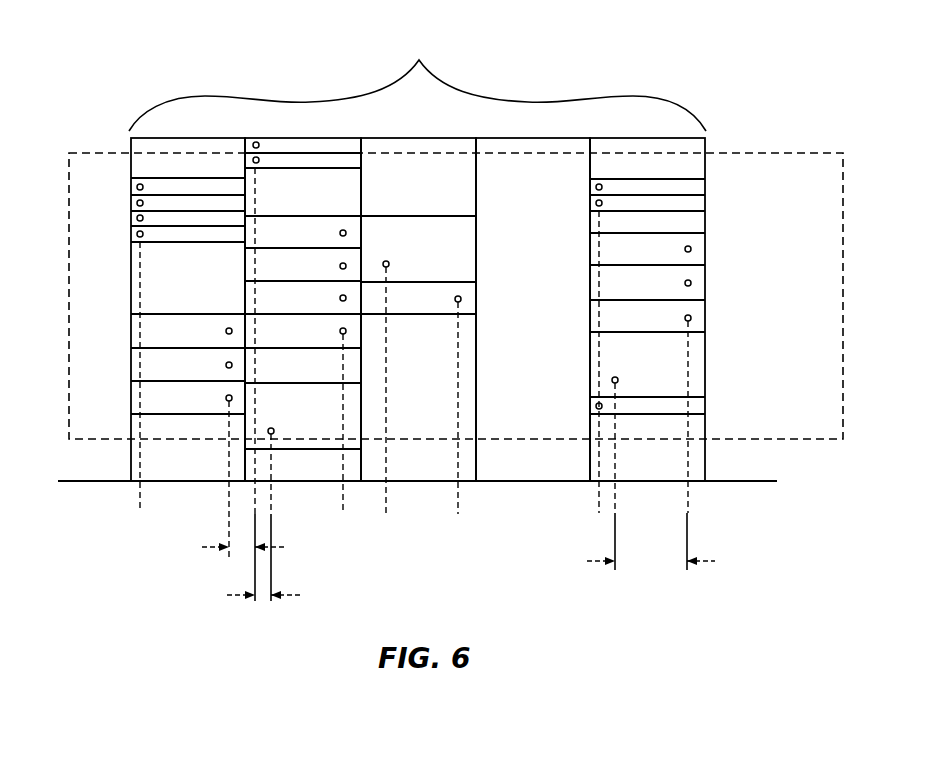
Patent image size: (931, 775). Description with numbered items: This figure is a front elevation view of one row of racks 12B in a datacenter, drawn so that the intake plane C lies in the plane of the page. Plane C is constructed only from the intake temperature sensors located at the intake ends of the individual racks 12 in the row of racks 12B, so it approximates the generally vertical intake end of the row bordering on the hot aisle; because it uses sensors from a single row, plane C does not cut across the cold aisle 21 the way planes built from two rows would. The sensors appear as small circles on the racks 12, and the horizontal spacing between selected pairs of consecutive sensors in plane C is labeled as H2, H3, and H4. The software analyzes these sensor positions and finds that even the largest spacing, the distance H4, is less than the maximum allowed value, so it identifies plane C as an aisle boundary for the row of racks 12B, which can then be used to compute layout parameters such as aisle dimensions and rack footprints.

The rack 12 is at (180, 129).
The row of racks 12B is at (417, 271).
The cold aisle 21 is at (475, 588).
The intake plane C is at (795, 223).
The horizontal spacing H2 is at (282, 565).
The horizontal spacing H3 is at (261, 551).
The horizontal spacing H4 is at (651, 549).